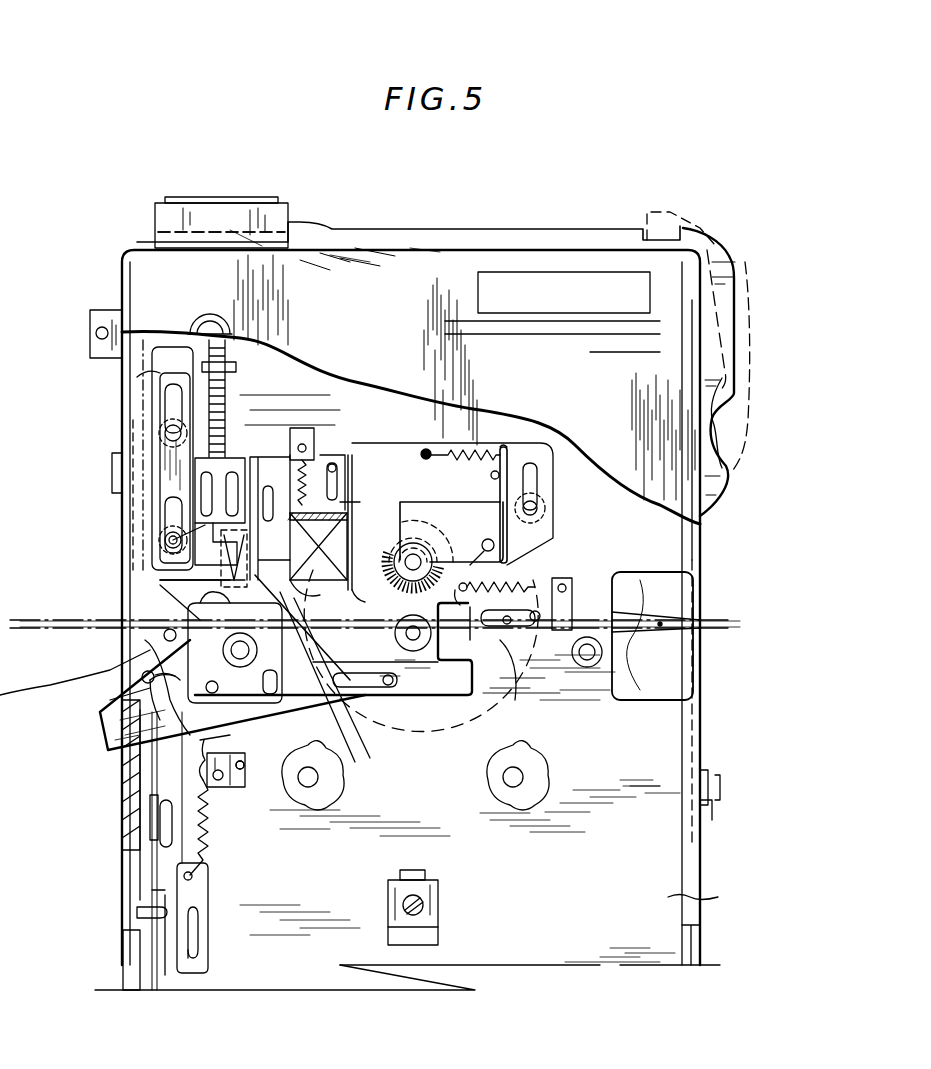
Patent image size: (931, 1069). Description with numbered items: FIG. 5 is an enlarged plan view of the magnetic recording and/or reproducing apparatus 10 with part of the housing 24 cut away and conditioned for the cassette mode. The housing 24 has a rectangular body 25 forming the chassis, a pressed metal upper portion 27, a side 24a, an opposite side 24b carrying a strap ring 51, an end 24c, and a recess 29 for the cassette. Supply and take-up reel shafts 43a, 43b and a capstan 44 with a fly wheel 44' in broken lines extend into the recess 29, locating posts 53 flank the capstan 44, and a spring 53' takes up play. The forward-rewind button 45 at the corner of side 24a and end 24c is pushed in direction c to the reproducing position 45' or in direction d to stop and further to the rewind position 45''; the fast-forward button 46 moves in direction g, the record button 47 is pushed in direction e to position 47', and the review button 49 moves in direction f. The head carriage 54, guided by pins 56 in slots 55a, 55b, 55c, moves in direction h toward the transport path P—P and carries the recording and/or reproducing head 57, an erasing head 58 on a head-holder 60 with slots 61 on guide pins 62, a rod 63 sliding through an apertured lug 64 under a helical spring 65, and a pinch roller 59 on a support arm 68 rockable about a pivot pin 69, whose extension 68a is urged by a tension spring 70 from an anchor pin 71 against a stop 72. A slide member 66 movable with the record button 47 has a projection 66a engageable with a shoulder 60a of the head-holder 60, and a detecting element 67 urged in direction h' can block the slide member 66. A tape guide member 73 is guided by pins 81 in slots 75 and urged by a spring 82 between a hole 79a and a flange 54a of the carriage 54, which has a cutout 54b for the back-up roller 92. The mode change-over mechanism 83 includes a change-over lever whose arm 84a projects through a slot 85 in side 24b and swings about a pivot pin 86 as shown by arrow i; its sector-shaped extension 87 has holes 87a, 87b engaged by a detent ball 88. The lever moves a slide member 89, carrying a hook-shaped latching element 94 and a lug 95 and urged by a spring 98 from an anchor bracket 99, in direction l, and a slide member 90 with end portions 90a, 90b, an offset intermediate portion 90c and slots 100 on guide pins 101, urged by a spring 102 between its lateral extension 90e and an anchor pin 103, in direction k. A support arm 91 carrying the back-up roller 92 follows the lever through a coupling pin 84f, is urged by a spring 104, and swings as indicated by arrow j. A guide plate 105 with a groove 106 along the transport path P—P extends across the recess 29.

The magnetic recording and/or reproducing apparatus 10 is at (546, 214).
The housing 24 is at (703, 723).
The side of housing 24a is at (710, 628).
The side of housing 24b is at (122, 936).
The end of housing 24c is at (474, 248).
The rectangular body 25 is at (708, 899).
The pressed metal upper portion 27 is at (368, 250).
The recess 29 is at (628, 853).
The supply reel shaft 43a is at (378, 844).
The take-up reel shaft 43b is at (602, 774).
The capstan 44 is at (420, 567).
The fly wheel 44' is at (421, 680).
The forward-rewind button 45 is at (709, 351).
The reproducing position of forward-rewind button 45' is at (675, 209).
The rewind position of forward-rewind button 45'' is at (769, 366).
The fast-forward button 46 is at (713, 776).
The record button 47 is at (210, 204).
The depressed position of record button 47' is at (178, 216).
The review button 49 is at (118, 452).
The ring 51 is at (96, 332).
The locating pins or posts 53 is at (430, 684).
The spring 53' is at (435, 907).
The head carriage 54 is at (416, 437).
The flange 54a is at (370, 502).
The cutout 54b is at (353, 609).
The slot 55a is at (166, 508).
The slot 55b is at (165, 405).
The elongated slot 55c is at (530, 470).
The guide pins 56 is at (170, 432).
The magnetic recording and/or reproducing head 57 is at (348, 530).
The magnetic erasing head 58 is at (238, 580).
The pinch roller 59 is at (363, 599).
The head-holder 60 is at (225, 458).
The shoulder 60a is at (200, 555).
The slots 61 is at (170, 540).
The guide pins 62 is at (200, 476).
The rod 63 is at (232, 338).
The apertured lug 64 is at (226, 372).
The helical spring 65 is at (236, 388).
The slide member 66 is at (143, 332).
The lateral projection 66a is at (160, 600).
The detecting element 67 is at (148, 905).
The support arm 68 is at (417, 510).
The extension of support arm 68a is at (515, 440).
The pivot pin 69 is at (494, 533).
The tension spring 70 is at (458, 440).
The anchor pin 71 is at (428, 460).
The stop 72 is at (491, 476).
The tape guide member 73 is at (310, 415).
The slots 75 is at (293, 482).
The hole 79a is at (298, 445).
The guide pins 81 is at (335, 462).
The spring 82 is at (328, 458).
The mode change-over mechanism 83 is at (254, 735).
The arm of change-over lever 84a is at (110, 736).
The coupling pin 84f is at (332, 729).
The slot 85 is at (100, 672).
The pivot pin 86 is at (206, 686).
The sector-shaped extension 87 is at (140, 690).
The hole 87a is at (150, 697).
The hole 87b is at (148, 678).
The detent ball 88 is at (165, 638).
The slide member 89 is at (207, 958).
The slide member 90 is at (452, 695).
The end portion of slide member 90a is at (235, 647).
The end portion of slide member 90b is at (464, 608).
The intermediate portion 90c is at (378, 672).
The lateral extension 90e is at (566, 588).
The support arm 91 is at (320, 745).
The back-up roller 92 is at (300, 610).
The hook-shaped latching element 94 is at (150, 814).
The lug 95 is at (188, 975).
The spring 98 is at (210, 830).
The anchor bracket 99 is at (238, 788).
The slots 100 is at (358, 714).
The guide pins 101 is at (533, 628).
The spring 102 is at (497, 579).
The anchor pin 103 is at (476, 556).
The spring 104 is at (217, 753).
The guide plate 105 is at (655, 572).
The groove 106 is at (660, 626).
The transport path P is at (45, 622).
The arrow c is at (700, 263).
The arrow d is at (706, 474).
The arrow e is at (222, 222).
The arrow f is at (105, 492).
The arrow g is at (719, 784).
The arrow h is at (576, 530).
The arrow h' is at (156, 937).
The arrow i is at (165, 660).
The arrow j is at (295, 625).
The arrow k is at (448, 673).
The arrow l is at (215, 897).